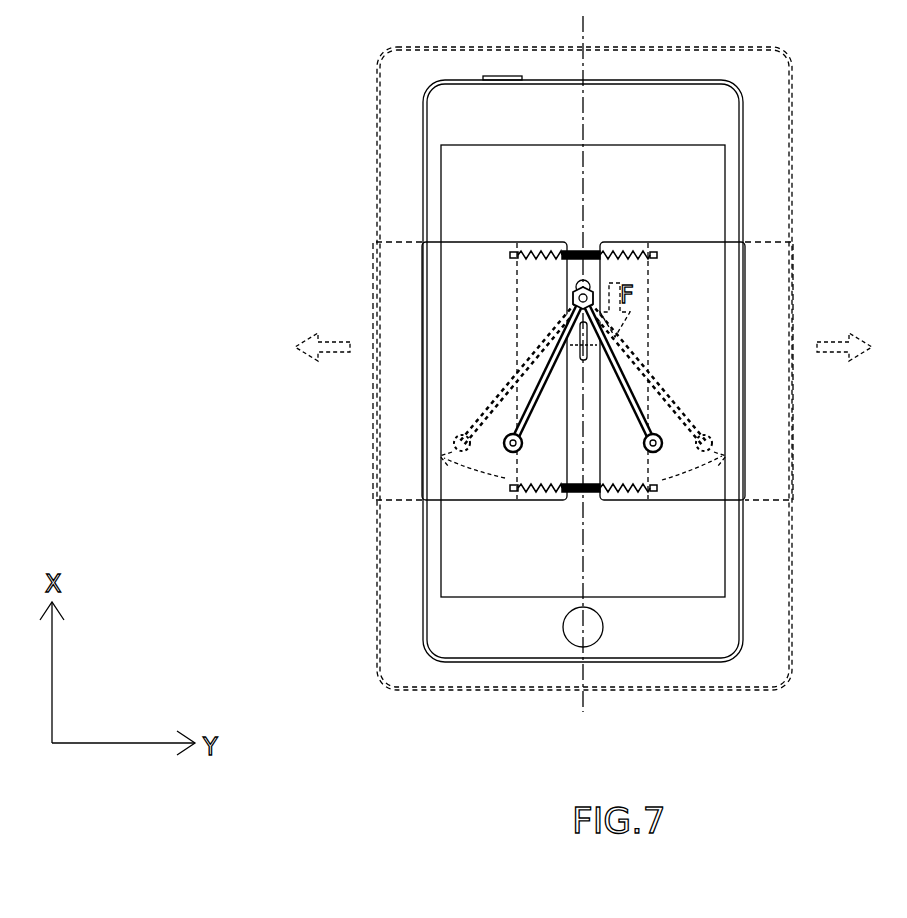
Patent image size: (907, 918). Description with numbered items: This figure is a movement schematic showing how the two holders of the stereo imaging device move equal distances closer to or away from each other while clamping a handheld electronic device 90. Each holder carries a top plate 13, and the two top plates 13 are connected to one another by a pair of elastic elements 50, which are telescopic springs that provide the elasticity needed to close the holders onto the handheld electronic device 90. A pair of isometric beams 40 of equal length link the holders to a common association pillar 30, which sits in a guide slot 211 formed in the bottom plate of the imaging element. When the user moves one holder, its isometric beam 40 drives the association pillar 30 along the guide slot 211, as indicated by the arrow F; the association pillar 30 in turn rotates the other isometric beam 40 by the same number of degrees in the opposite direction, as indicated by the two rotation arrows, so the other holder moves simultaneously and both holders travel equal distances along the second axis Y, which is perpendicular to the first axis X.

The handheld electronic device 90 is at (733, 188).
The top plate 13 is at (733, 262).
The association pillar 30 is at (575, 298).
The isometric beam 40 is at (643, 423).
The elastic element 50 is at (588, 490).
The guide slot 211 is at (590, 345).